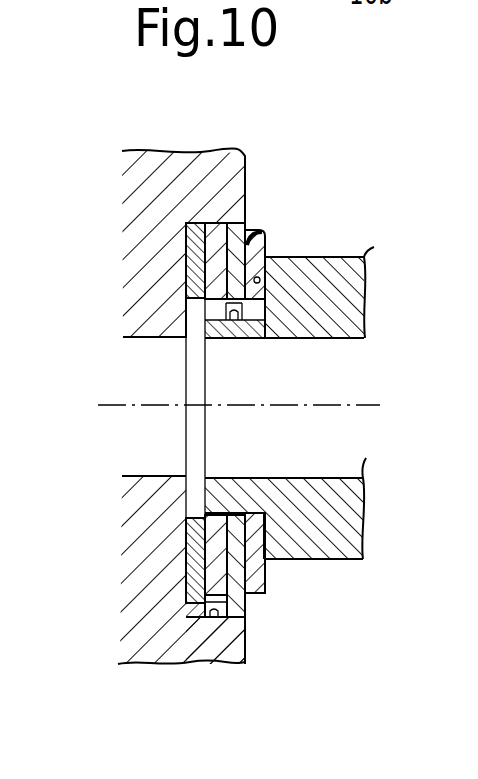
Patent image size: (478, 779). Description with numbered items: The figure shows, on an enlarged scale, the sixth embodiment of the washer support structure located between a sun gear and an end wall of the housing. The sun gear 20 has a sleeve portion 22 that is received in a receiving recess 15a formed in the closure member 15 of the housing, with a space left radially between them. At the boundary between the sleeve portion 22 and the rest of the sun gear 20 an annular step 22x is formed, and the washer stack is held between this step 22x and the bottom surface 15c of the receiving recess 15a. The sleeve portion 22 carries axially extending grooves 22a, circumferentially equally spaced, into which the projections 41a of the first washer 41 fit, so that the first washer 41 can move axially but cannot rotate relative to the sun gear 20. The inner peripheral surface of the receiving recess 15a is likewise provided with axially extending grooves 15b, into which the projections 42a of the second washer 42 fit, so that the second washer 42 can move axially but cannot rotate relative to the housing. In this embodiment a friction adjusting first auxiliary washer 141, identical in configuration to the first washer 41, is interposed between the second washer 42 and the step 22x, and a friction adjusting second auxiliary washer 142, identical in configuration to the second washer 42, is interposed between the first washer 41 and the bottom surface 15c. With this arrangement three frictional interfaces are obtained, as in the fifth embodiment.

The closure member 15 is at (250, 225).
The receiving recess 15a is at (260, 228).
The axially extending grooves 15b is at (213, 620).
The bottom surface 15c is at (188, 264).
The sun gear 20 is at (366, 261).
The sleeve portion 22 is at (223, 493).
The axially extending grooves 22a is at (233, 318).
The annular step 22x is at (264, 280).
The first washer 41 is at (219, 223).
The projections 41a is at (212, 325).
The second washer 42 is at (232, 223).
The projections 42a is at (192, 612).
The friction adjusting first auxiliary washer 141 is at (254, 225).
The friction adjusting second auxiliary washer 142 is at (196, 223).